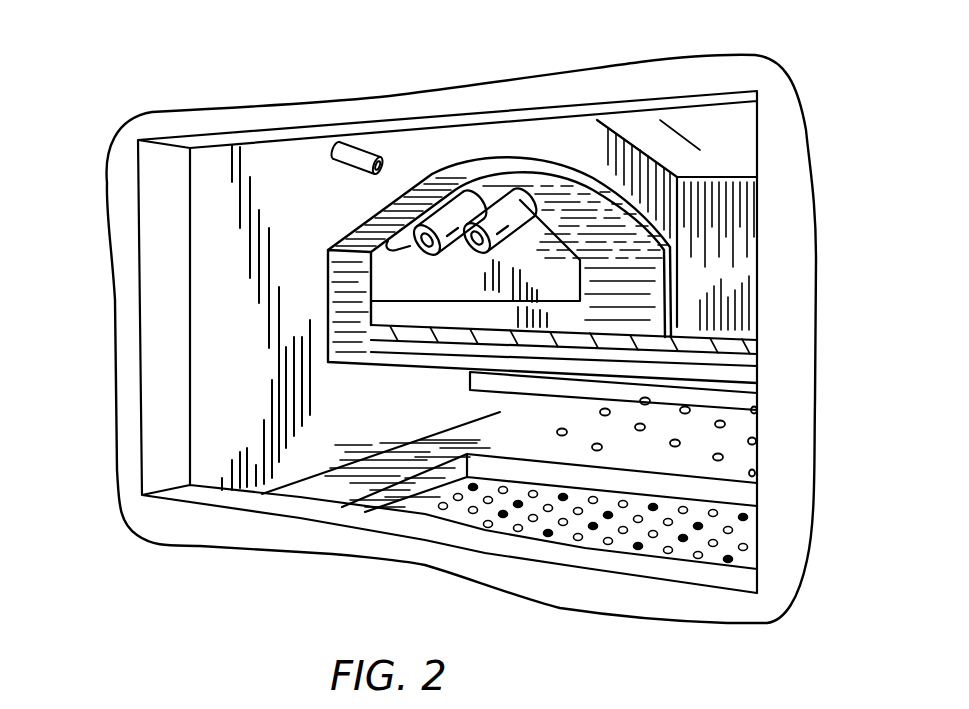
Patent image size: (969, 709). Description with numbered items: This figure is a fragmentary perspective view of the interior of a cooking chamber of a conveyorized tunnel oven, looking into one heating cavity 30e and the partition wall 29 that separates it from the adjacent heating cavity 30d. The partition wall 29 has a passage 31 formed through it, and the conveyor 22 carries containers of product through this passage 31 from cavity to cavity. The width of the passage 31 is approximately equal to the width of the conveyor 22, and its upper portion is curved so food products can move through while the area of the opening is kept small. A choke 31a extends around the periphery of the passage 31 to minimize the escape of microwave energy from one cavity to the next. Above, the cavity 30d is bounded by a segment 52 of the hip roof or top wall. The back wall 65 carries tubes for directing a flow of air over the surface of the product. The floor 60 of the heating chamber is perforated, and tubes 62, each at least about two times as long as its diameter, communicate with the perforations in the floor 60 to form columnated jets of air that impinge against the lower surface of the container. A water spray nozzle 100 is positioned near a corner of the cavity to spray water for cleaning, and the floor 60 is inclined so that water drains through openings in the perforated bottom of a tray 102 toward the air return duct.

The partition wall 29 is at (200, 185).
The water spray nozzle 100 is at (335, 150).
The choke 31a is at (347, 228).
The passage 31 is at (438, 300).
The conveyor 22 is at (475, 333).
The heating cavity 30e is at (461, 195).
The heating cavity 30d is at (673, 131).
The segment of hip roof 52 is at (737, 145).
The back wall 65 is at (738, 250).
The floor 60 is at (740, 462).
The tubes 62 is at (724, 425).
The tray 102 is at (415, 515).